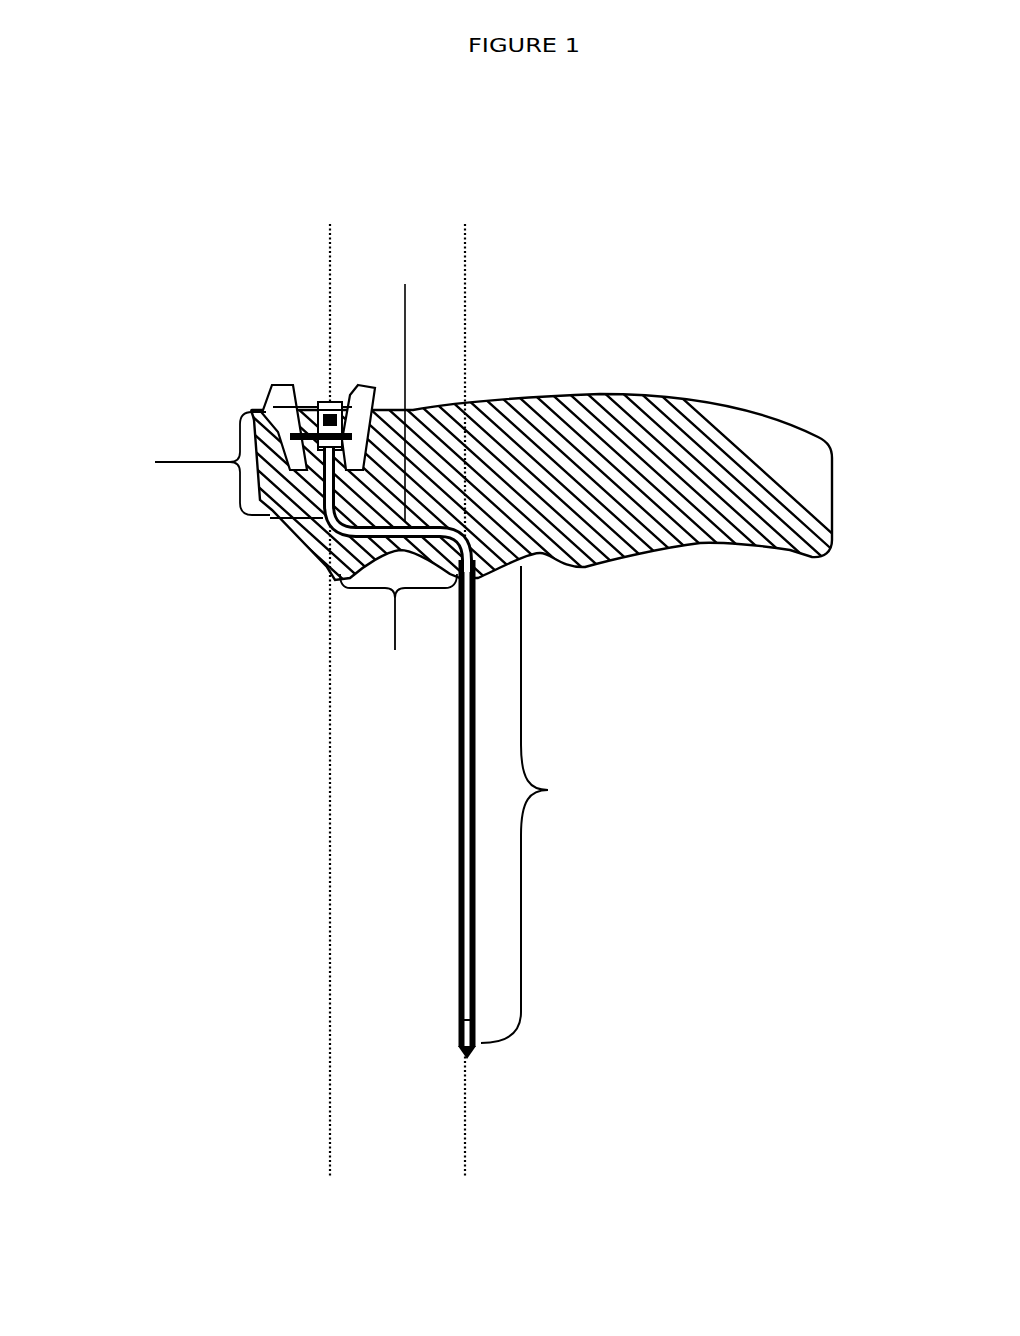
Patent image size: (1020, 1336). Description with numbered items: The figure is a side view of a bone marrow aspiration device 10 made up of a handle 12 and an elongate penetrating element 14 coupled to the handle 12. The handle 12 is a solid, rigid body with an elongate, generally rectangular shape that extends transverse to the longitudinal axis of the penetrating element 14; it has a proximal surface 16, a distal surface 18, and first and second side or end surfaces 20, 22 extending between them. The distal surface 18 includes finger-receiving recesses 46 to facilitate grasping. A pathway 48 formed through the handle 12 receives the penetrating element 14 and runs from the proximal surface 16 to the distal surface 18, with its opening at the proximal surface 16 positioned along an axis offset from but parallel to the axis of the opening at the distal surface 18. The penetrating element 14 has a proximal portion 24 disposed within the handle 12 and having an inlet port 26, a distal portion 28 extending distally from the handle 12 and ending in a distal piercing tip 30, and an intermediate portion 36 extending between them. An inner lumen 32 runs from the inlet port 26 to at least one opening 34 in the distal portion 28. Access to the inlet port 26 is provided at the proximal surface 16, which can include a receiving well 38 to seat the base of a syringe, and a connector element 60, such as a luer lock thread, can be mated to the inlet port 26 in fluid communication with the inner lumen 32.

The bone marrow aspiration device 10 is at (140, 270).
The handle 12 is at (643, 438).
The elongate penetrating element 14 is at (265, 768).
The proximal surface 16 is at (721, 408).
The distal surface 18 is at (702, 546).
The first side surface 20 is at (282, 537).
The second side surface 22 is at (833, 494).
The proximal portion 24 is at (192, 463).
The inlet port 26 is at (329, 383).
The distal portion 28 is at (535, 804).
The distal piercing tip 30 is at (460, 1046).
The inner lumen 32 is at (457, 862).
The opening 34 is at (460, 1020).
The intermediate portion 36 is at (398, 627).
The receiving well 38 is at (310, 382).
The finger-receiving recesses 46 is at (400, 562).
The pathway 48 is at (404, 389).
The connector element 60 is at (339, 401).